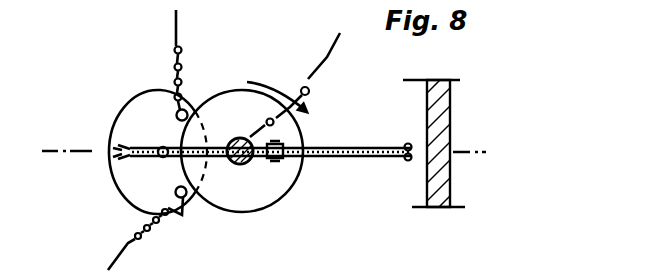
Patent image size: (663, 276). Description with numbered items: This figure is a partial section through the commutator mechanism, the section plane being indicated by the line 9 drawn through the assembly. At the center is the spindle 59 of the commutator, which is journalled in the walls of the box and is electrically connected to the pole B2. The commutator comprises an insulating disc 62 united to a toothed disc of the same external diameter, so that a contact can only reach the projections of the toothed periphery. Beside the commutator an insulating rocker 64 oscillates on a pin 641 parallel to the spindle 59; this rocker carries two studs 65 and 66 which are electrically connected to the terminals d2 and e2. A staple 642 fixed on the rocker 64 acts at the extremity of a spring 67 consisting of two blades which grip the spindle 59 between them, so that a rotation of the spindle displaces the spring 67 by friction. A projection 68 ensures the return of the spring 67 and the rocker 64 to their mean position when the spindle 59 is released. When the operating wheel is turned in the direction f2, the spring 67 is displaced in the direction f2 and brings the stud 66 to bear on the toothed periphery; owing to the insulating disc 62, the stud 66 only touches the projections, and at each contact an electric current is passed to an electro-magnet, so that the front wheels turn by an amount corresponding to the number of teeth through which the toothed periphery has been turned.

The section line 9 is at (266, 143).
The insulating rocker 64 is at (137, 115).
The insulating disc 62 is at (291, 172).
The spring 67 is at (345, 148).
The staple 642 is at (127, 160).
The pin 641 is at (162, 158).
The spindle 59 is at (248, 163).
The projection 68 is at (405, 162).
The terminal e2 is at (189, 60).
The stud 66 is at (189, 110).
The terminal d2 is at (134, 236).
The stud 65 is at (185, 198).
The pole B2 is at (302, 85).
The direction of rotation f2 is at (277, 87).